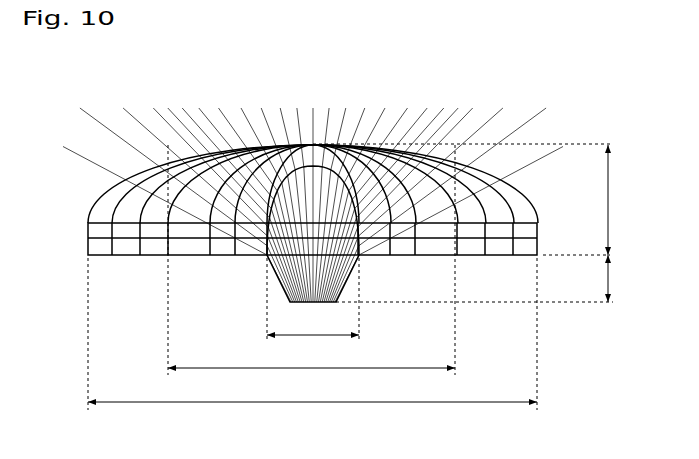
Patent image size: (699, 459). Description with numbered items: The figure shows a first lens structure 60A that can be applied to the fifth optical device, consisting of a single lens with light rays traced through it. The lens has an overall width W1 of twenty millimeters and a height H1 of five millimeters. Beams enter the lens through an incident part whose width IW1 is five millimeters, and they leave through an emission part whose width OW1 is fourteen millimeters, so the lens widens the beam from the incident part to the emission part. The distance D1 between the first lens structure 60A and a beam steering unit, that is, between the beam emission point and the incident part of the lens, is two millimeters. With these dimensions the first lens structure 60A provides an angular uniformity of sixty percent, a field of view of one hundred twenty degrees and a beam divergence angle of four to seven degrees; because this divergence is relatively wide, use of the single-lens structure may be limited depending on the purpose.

The first lens structure 60A is at (634, 101).
The height H1 is at (472, 199).
The distance D1 is at (484, 278).
The width W1 is at (312, 340).
The width of emission part OW1 is at (311, 268).
The width of incident part IW1 is at (313, 308).